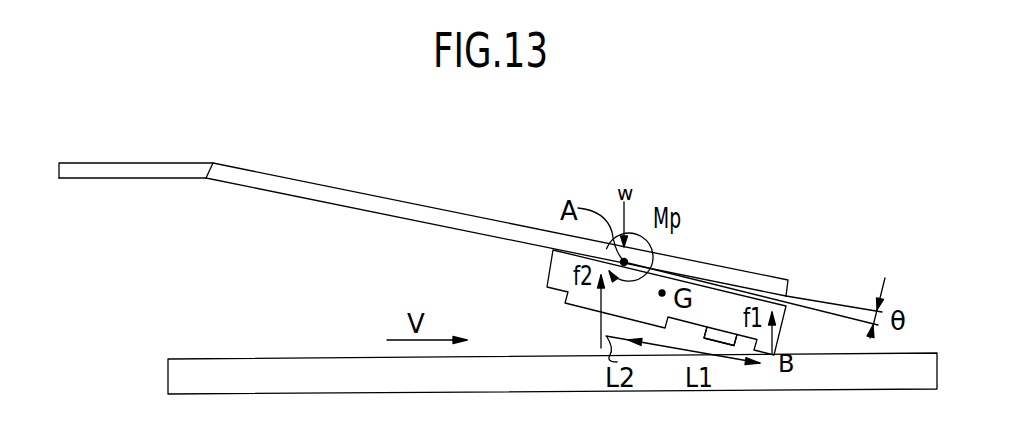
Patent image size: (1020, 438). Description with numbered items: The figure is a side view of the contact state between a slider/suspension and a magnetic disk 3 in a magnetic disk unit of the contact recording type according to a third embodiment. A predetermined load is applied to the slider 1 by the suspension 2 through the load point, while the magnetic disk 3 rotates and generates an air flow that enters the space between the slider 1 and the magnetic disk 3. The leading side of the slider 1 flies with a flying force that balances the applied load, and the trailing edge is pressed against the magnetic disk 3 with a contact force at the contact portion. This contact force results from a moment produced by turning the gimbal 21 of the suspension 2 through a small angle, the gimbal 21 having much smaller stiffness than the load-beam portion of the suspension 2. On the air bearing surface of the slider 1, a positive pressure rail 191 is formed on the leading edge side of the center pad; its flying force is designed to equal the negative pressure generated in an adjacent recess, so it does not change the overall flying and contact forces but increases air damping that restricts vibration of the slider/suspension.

The slider 1 is at (557, 268).
The suspension 2 is at (482, 213).
The magnetic disk 3 is at (208, 368).
The positive pressure rail 191 is at (721, 333).
The gimbal 21 is at (768, 302).